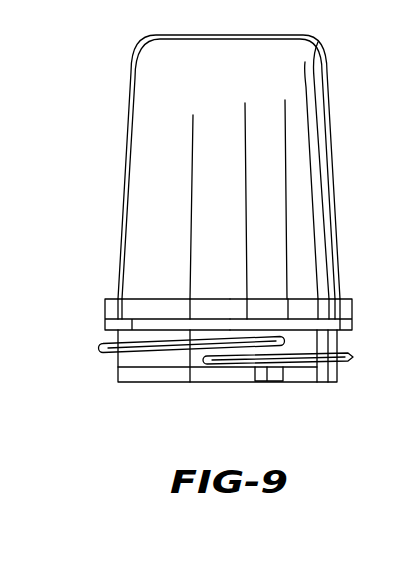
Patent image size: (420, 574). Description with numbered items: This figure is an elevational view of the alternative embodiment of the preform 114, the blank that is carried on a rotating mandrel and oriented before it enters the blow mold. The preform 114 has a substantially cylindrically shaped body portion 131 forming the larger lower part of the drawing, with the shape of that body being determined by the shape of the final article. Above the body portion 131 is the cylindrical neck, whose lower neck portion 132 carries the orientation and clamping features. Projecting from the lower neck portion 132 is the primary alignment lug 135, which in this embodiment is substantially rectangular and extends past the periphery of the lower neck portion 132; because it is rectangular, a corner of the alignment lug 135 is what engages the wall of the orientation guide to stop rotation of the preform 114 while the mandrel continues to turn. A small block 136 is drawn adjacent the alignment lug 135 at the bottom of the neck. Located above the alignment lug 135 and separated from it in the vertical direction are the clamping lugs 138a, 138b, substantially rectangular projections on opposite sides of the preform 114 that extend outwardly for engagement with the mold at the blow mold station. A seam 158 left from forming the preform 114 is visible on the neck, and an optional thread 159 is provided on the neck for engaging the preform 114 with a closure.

The preform 114 is at (328, 117).
The body portion 131 is at (120, 250).
The lower neck portion 132 is at (215, 385).
The alignment lug 135 is at (252, 373).
The stop block 136 is at (268, 382).
The clamping lug 138a is at (110, 305).
The clamping lug 138b is at (348, 302).
The seam 158 is at (197, 353).
The thread 159 is at (350, 357).